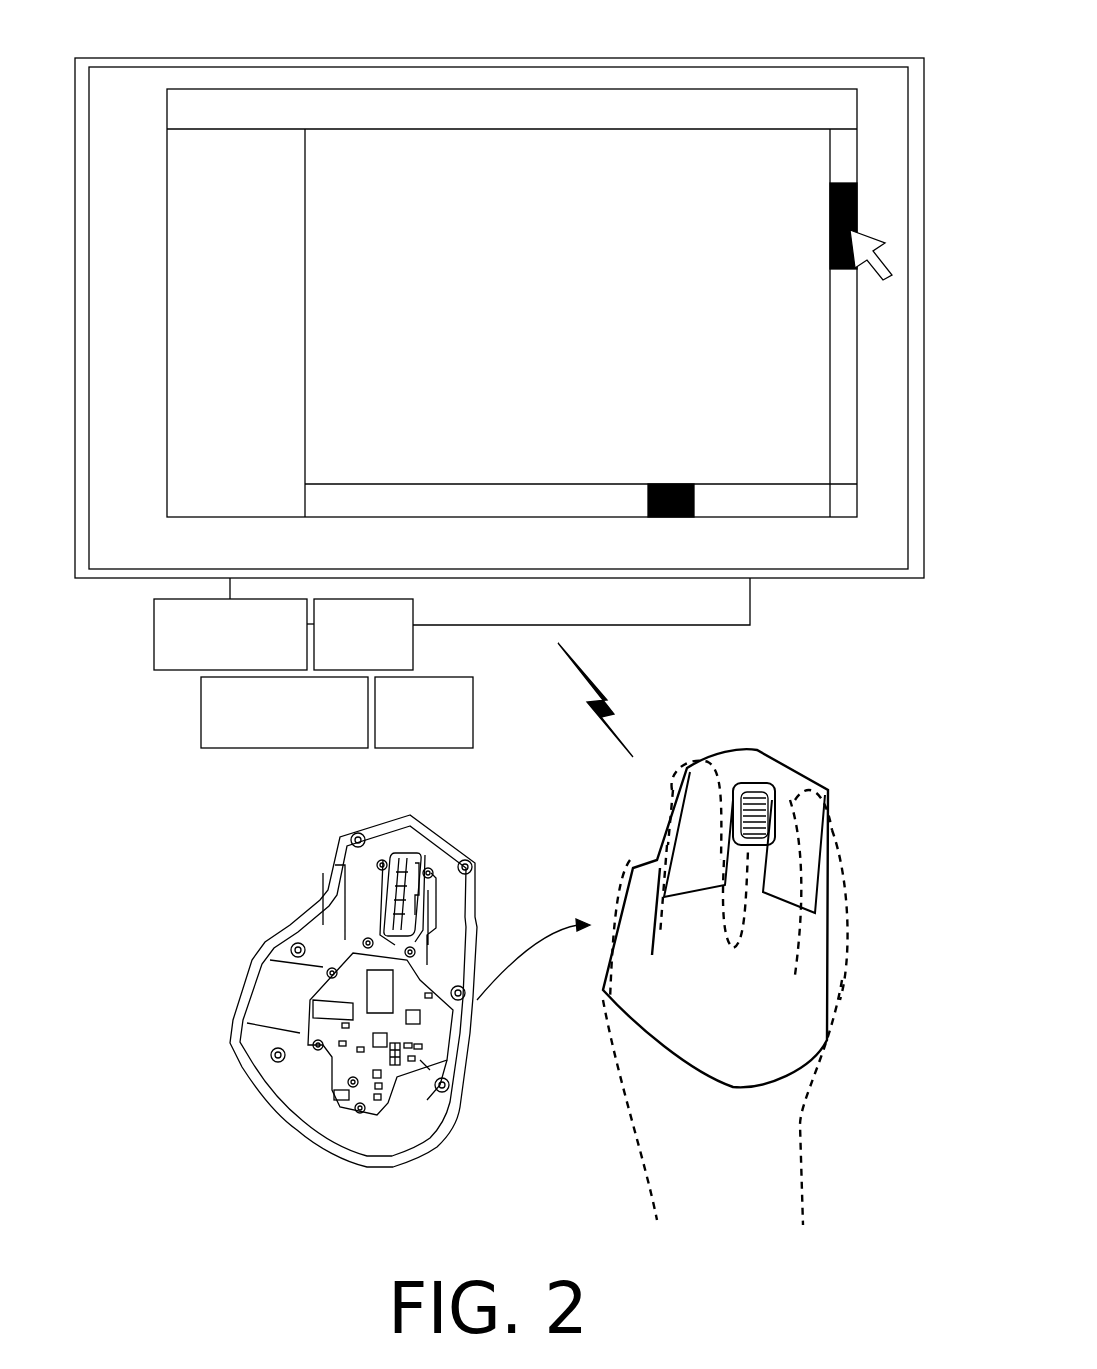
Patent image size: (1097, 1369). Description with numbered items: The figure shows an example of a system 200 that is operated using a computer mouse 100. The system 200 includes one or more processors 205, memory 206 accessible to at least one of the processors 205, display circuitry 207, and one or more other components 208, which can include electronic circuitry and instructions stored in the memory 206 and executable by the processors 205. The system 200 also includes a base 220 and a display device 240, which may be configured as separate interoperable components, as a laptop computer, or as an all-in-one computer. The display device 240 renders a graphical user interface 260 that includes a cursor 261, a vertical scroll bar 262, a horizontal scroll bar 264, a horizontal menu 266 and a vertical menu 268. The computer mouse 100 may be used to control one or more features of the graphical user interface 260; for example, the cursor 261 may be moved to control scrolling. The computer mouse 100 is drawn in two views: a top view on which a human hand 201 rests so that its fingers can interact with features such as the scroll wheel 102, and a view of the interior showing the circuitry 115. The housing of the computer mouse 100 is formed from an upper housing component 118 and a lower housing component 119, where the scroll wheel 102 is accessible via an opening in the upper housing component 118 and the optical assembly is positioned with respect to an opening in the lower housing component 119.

The system 200 is at (500, 379).
The display device 240 is at (499, 295).
The graphical user interface 260 is at (529, 303).
The horizontal menu 266 is at (512, 148).
The vertical menu 268 is at (262, 323).
The horizontal scroll bar 264 is at (581, 480).
The vertical scroll bar 262 is at (803, 323).
The cursor 261 is at (832, 273).
The base 220 is at (489, 663).
The processors 205 is at (230, 634).
The memory 206 is at (363, 634).
The display circuitry 207 is at (284, 712).
The other components 208 is at (424, 712).
The computer mouse 100 is at (549, 971).
The scroll wheel 102 is at (745, 790).
The upper housing component 118 is at (758, 918).
The human hand 201 is at (701, 993).
The circuitry 115 is at (323, 993).
The lower housing component 119 is at (468, 1058).